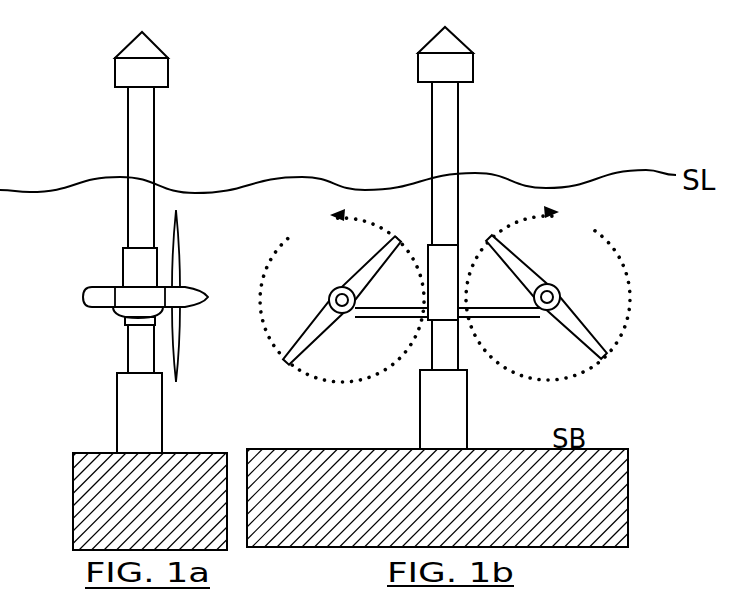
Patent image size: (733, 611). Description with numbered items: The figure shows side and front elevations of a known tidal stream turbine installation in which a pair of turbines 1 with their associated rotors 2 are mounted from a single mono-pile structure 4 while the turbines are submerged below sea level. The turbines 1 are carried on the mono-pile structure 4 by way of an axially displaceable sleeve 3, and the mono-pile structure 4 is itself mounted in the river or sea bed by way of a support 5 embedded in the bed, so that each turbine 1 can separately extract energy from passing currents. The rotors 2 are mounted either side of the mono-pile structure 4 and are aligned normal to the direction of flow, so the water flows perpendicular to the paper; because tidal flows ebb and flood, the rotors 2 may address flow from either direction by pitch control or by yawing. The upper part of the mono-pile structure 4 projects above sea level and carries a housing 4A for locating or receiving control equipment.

In FIG. 1A, the turbine 1 is at (121, 297).
In FIG. 1B, the turbine 1 is at (560, 290).
In FIG. 1A, the rotor 2 is at (173, 268).
In FIG. 1B, the rotor 2 is at (307, 335).
In FIG. 1B, the axially displaceable sleeve 3 is at (450, 288).
In FIG. 1A, the mono-pile structure 4 is at (141, 125).
In FIG. 1B, the mono-pile structure 4 is at (445, 125).
In FIG. 1A, the housing 4A is at (127, 72).
In FIG. 1A, the support 5 is at (133, 432).
In FIG. 1B, the support 5 is at (452, 421).